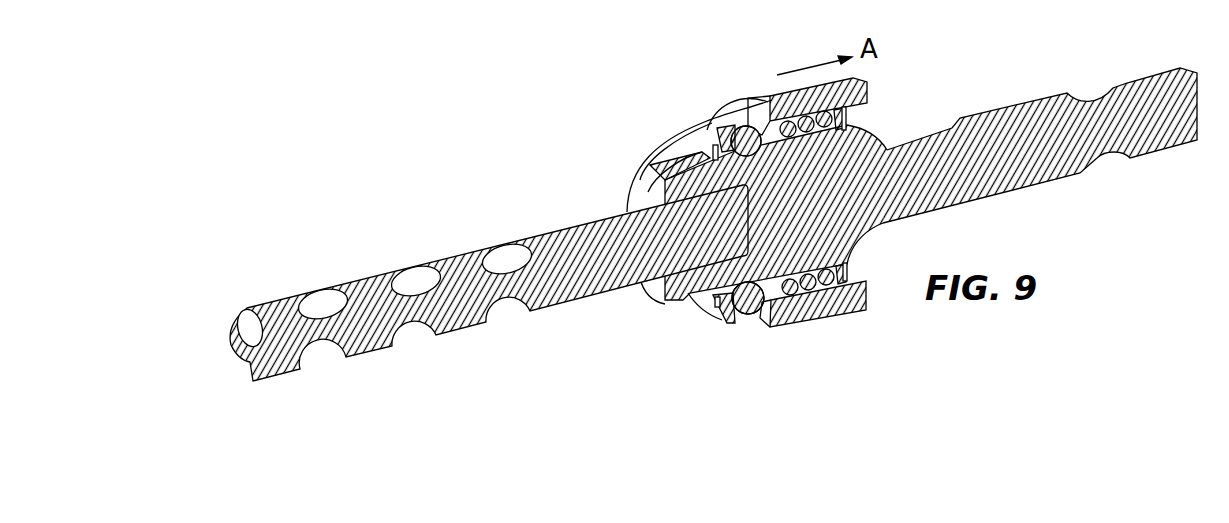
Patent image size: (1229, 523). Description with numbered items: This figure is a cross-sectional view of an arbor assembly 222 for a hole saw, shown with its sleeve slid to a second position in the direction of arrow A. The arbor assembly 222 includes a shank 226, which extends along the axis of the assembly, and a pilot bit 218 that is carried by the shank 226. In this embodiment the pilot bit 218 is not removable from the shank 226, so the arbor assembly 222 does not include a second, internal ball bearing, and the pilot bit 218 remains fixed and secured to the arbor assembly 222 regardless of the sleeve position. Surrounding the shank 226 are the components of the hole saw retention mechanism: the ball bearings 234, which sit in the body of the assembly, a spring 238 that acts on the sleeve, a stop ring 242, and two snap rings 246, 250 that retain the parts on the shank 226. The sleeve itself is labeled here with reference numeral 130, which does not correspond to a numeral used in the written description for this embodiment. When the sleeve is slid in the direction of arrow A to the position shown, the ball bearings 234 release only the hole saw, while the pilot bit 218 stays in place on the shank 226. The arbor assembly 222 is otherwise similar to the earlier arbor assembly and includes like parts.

The sleeve 130 is at (787, 92).
The pilot bit 218 is at (442, 253).
The arbor assembly 222 is at (583, 111).
The shank 226 is at (982, 114).
The ball bearings 234 is at (745, 126).
The spring 238 is at (812, 291).
The stop ring 242 is at (853, 292).
The snap ring 246 is at (720, 318).
The snap ring 250 is at (848, 268).